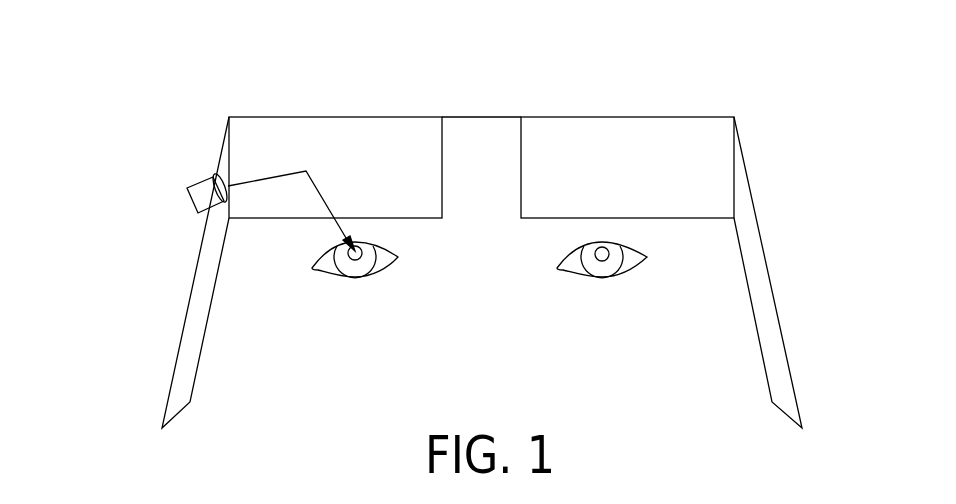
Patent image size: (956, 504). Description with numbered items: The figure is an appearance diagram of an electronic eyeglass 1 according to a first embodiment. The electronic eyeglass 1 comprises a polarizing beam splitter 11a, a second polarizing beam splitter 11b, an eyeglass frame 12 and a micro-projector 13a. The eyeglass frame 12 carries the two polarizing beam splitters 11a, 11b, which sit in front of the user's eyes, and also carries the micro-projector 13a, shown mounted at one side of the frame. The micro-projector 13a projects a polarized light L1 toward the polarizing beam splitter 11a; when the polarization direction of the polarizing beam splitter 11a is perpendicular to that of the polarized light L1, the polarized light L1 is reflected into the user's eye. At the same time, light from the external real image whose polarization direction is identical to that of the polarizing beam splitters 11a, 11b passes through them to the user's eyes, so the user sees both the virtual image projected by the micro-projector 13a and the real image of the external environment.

The electronic eyeglass 1 is at (36, 52).
The polarizing beam splitter 11a is at (302, 127).
The polarizing beam splitter 11b is at (591, 128).
The eyeglass frame 12 is at (763, 321).
The micro-projector 13a is at (197, 183).
The polarized light L1 is at (293, 211).